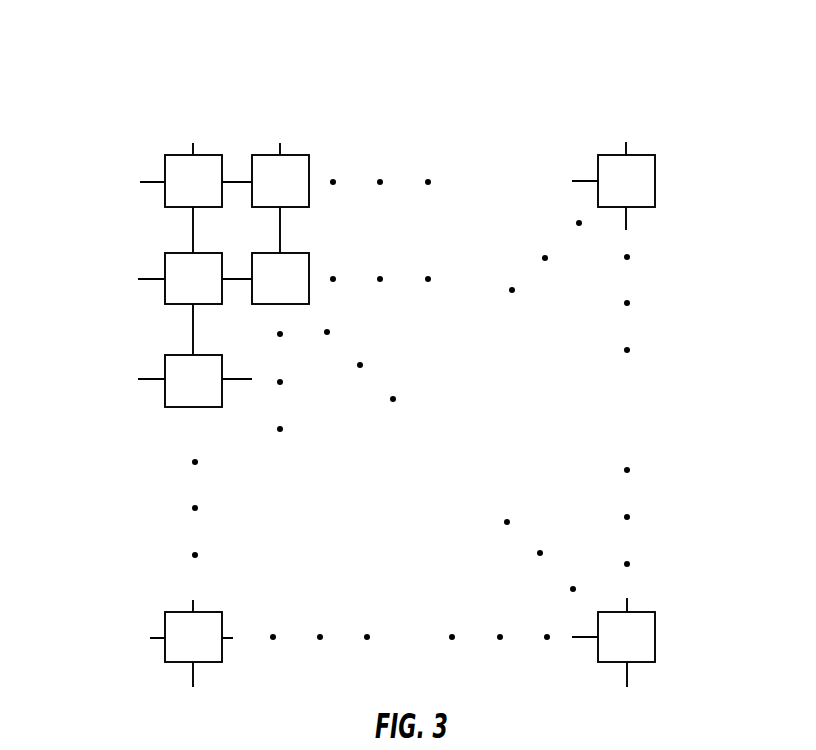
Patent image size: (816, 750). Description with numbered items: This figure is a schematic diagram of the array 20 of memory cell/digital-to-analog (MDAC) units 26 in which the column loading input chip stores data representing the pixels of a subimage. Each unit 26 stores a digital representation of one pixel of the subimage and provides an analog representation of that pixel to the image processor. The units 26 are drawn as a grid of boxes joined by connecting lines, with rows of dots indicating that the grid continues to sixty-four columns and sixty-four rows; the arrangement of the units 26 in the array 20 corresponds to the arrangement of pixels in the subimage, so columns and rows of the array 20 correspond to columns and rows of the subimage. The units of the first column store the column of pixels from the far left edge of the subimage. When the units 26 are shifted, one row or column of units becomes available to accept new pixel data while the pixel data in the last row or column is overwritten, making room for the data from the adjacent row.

The array 20 is at (619, 85).
The memory cell/digital-to-analog (MDAC) unit 26 is at (412, 394).